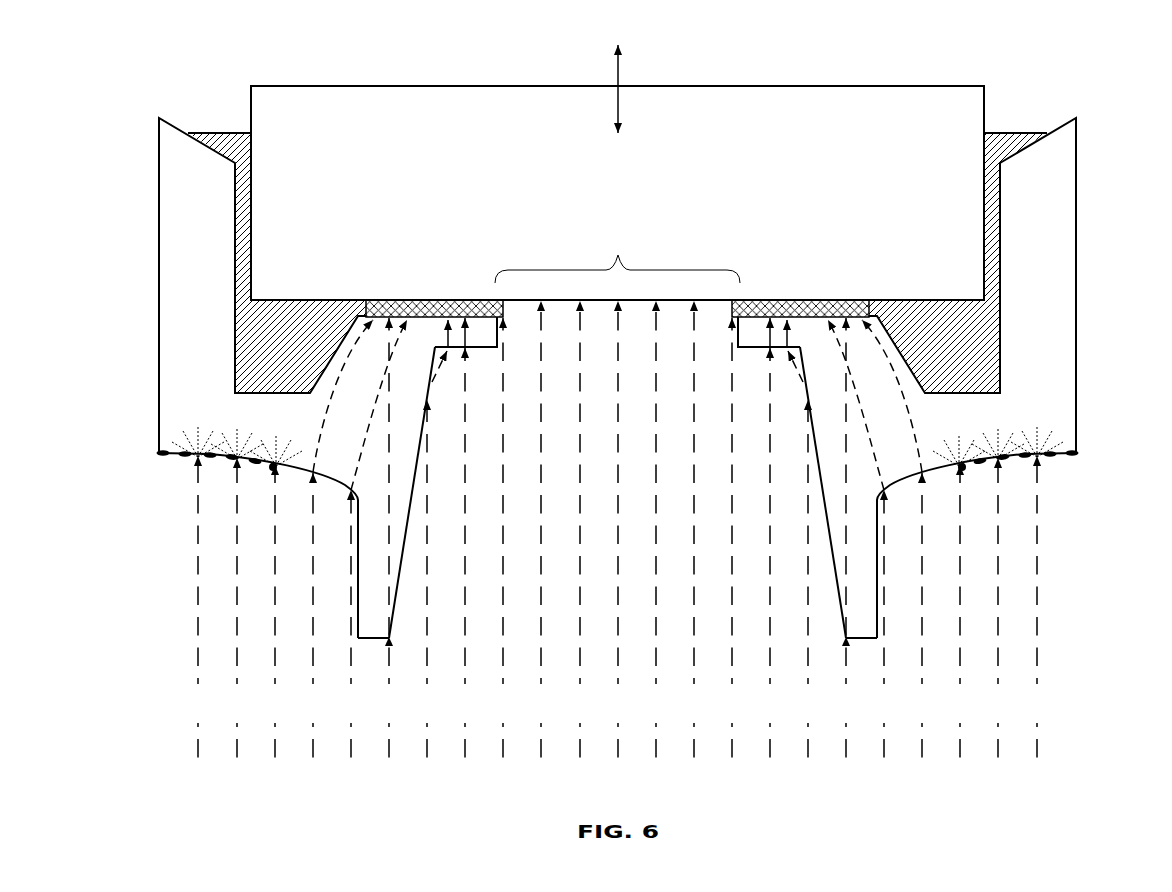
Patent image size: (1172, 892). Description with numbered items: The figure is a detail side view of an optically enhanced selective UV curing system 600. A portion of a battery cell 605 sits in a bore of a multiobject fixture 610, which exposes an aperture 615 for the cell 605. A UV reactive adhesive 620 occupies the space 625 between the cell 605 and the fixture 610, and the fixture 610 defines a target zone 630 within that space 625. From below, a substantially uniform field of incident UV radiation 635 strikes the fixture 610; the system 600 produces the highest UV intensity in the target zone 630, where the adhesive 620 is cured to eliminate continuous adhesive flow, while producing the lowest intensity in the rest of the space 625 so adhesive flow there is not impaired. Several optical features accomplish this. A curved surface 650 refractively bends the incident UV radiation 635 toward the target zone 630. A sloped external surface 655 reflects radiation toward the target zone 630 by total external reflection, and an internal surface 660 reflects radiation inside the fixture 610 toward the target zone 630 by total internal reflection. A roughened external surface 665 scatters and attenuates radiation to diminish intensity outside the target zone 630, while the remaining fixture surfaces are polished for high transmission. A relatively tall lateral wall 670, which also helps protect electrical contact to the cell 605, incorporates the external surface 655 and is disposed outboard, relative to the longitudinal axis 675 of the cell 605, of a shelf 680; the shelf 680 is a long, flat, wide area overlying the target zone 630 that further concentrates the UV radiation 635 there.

The optically enhanced selective UV curing system 600 is at (1085, 70).
The battery cell 605 is at (617, 193).
The multiobject fixture 610 is at (159, 208).
The aperture 615 is at (580, 270).
The UV reactive adhesive 620 is at (236, 132).
The space 625 is at (243, 235).
The target zone 630 is at (429, 306).
The incident UV radiation 635 is at (620, 530).
The curved surface 650 is at (297, 470).
The external surface 655 is at (419, 459).
The internal surface 660 is at (318, 375).
The roughened external surface 665 is at (220, 445).
The lateral wall 670 is at (370, 623).
The longitudinal axis 675 is at (619, 77).
The shelf 680 is at (480, 328).